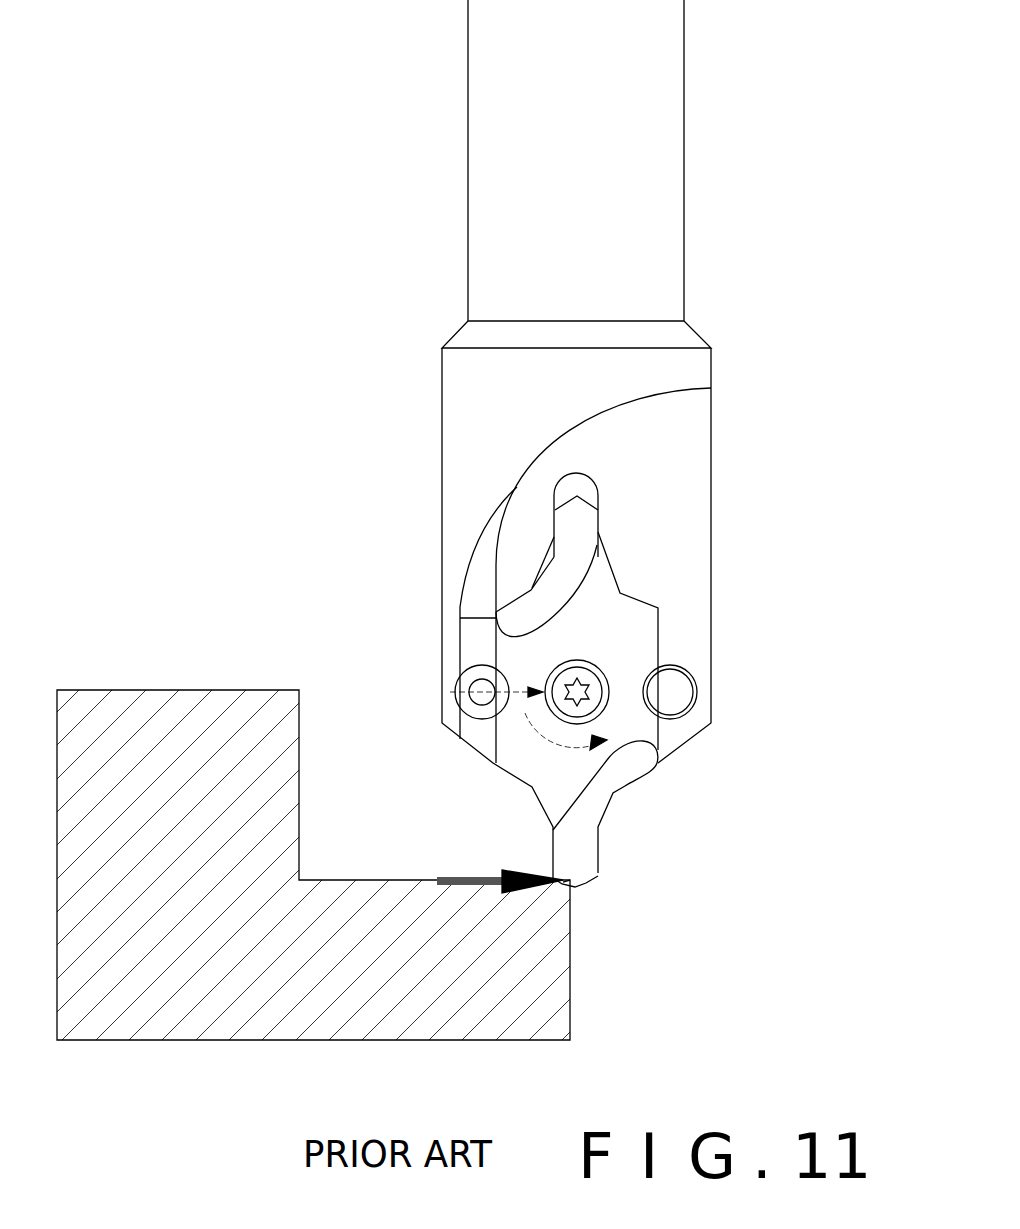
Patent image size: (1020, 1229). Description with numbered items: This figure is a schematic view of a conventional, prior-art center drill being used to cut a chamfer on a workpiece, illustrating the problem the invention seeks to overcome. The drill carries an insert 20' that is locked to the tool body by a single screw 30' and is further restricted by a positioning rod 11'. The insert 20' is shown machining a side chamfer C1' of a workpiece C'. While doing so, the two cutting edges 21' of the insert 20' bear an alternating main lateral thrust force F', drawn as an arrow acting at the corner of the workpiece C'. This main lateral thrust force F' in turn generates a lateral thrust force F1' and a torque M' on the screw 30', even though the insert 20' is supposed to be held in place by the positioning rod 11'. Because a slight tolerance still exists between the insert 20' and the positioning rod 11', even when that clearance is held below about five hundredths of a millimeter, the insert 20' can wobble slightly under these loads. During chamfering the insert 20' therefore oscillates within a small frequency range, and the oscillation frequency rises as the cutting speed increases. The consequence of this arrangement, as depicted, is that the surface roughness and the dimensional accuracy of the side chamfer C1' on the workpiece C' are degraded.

The positioning rod 11' is at (767, 655).
The screw 30' is at (694, 558).
The insert 20' is at (693, 825).
The cutting edges 21' is at (645, 922).
The workpiece C' is at (510, 614).
The side chamfer C1' is at (628, 961).
The main lateral thrust force F' is at (500, 862).
The lateral thrust force F1' is at (500, 669).
The torque M' is at (566, 749).